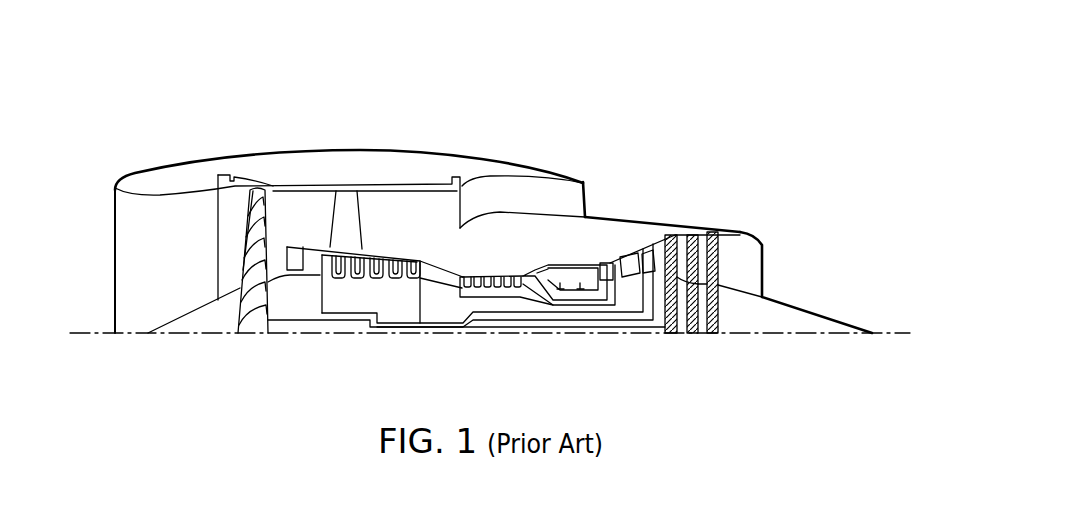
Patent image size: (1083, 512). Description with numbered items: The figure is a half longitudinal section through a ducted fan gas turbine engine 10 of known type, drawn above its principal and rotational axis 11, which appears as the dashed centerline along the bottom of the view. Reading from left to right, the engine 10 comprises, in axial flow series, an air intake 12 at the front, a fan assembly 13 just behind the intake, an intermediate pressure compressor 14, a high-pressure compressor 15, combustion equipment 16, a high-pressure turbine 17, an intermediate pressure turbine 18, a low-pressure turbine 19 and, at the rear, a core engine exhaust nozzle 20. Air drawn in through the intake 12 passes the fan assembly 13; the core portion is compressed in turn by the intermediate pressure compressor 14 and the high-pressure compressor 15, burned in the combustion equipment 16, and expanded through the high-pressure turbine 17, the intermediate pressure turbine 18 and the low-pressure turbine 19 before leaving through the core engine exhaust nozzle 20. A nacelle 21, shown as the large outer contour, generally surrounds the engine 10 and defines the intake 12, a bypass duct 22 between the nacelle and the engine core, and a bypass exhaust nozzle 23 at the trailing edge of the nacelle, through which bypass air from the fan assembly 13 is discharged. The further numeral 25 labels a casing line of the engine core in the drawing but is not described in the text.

The ducted fan gas turbine engine 10 is at (720, 93).
The principal and rotational axis 11 is at (100, 332).
The air intake 12 is at (132, 193).
The fan assembly 13 is at (247, 200).
The intermediate pressure compressor 14 is at (376, 262).
The high-pressure compressor 15 is at (490, 277).
The combustion equipment 16 is at (557, 287).
The high-pressure turbine 17 is at (608, 263).
The intermediate pressure turbine 18 is at (648, 248).
The low-pressure turbine 19 is at (690, 233).
The core engine exhaust nozzle 20 is at (748, 243).
The nacelle 21 is at (187, 170).
The bypass duct 22 is at (400, 207).
The bypass exhaust nozzle 23 is at (584, 183).
The engine core casing 25 is at (513, 212).